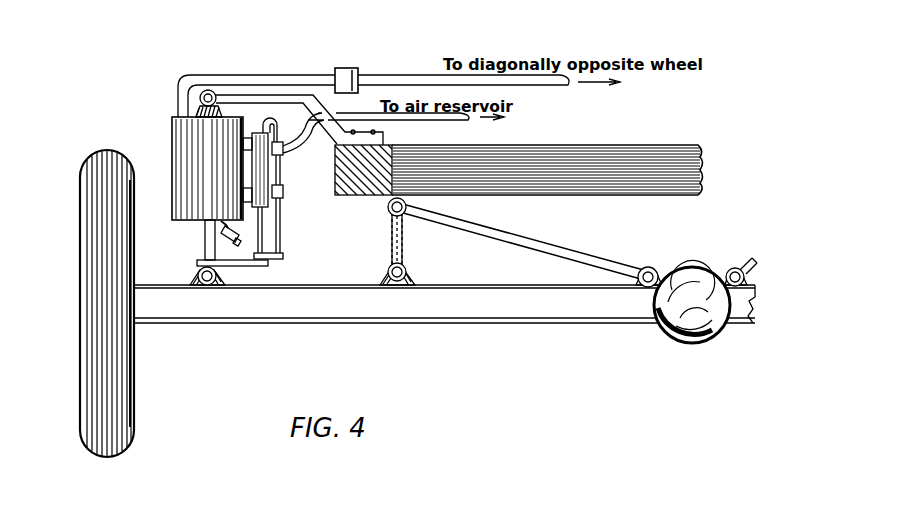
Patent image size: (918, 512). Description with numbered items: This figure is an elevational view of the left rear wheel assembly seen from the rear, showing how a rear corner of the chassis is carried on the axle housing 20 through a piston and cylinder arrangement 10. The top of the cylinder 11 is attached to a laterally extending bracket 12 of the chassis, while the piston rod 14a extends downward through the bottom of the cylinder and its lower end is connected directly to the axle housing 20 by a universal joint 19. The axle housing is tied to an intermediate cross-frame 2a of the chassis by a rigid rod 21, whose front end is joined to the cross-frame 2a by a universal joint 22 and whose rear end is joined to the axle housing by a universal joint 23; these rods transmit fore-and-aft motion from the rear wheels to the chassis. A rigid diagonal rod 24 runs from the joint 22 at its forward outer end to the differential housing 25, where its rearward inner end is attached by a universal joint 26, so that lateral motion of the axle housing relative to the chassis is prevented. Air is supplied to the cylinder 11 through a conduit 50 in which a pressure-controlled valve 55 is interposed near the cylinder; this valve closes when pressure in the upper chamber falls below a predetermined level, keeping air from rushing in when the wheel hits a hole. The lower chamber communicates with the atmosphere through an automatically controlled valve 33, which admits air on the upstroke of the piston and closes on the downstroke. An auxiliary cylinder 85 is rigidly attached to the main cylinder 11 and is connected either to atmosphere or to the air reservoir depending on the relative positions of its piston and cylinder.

The piston and cylinder arrangement 10 is at (170, 117).
The cylinder 11 is at (177, 145).
The bracket 12 is at (276, 96).
The piston rod 14a is at (205, 240).
The universal joint 19 is at (199, 272).
The axle housing 20 is at (478, 321).
The intermediate cross-frame 2a is at (596, 151).
The rigid rod 21 is at (405, 245).
The universal joint 22 is at (389, 208).
The universal joint 23 is at (389, 273).
The diagonal rod 24 is at (506, 233).
The differential housing 25 is at (686, 346).
The universal joint 26 is at (731, 267).
The automatically controlled valve 33 is at (228, 229).
The conduit 50 is at (229, 82).
The pressure-controlled valve 55 is at (350, 68).
The auxiliary cylinder 85 is at (268, 166).